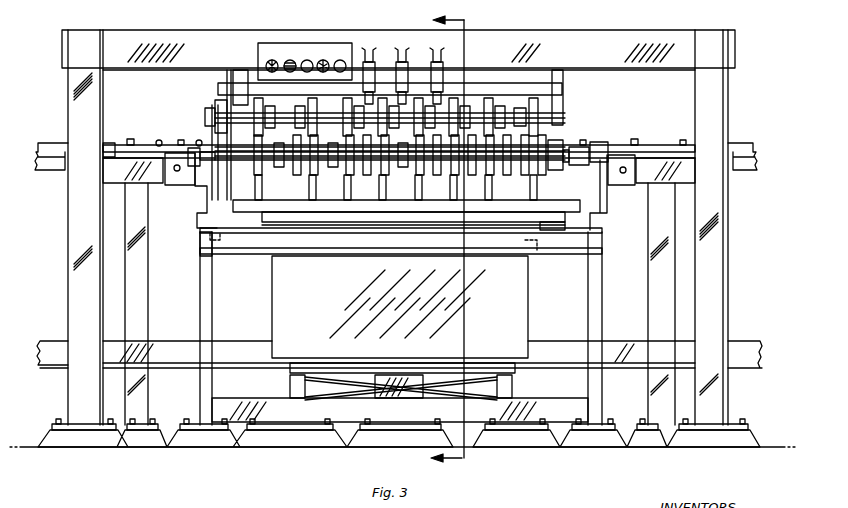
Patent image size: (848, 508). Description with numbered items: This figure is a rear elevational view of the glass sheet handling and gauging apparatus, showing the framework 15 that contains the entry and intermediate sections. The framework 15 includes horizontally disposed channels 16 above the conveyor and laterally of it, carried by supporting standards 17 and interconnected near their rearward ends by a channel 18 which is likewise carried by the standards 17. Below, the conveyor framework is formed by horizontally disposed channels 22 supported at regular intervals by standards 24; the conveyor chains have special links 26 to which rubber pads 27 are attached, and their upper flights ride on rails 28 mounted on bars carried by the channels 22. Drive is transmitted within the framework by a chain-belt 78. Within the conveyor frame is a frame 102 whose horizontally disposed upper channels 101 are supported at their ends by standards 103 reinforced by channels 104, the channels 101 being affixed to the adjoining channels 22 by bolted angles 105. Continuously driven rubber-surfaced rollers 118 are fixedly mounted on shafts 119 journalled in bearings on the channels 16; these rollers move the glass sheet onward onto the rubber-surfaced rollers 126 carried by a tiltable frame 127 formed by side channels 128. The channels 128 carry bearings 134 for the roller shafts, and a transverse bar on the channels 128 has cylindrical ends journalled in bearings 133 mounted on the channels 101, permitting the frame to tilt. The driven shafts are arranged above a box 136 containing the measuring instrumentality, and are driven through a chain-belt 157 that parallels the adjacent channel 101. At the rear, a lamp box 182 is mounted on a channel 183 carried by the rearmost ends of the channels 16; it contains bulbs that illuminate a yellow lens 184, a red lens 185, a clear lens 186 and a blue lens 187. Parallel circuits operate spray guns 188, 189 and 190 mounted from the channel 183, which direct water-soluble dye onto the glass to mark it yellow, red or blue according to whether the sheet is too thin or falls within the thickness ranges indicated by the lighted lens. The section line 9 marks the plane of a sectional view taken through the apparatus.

The section line 9- 9 is at (470, 22).
The framework 15 is at (526, 46).
The channels 16 is at (226, 89).
The supporting standards 17 is at (85, 95).
The channel 18 is at (136, 42).
The channels 22 is at (58, 172).
The standards 24 is at (135, 307).
The special links 26 is at (137, 144).
The pads 27 is at (132, 139).
The rails 28 is at (113, 144).
The chain-belt 78 is at (229, 80).
The upper channels 101 is at (207, 209).
The frame 102 is at (186, 256).
The standards 103 is at (213, 297).
The channels 104 is at (240, 236).
The bolted angles 105 is at (178, 180).
The rubber-surfaced rollers 118 is at (454, 116).
The shafts 119 is at (507, 116).
The rubber-surfaced rollers 126 is at (453, 174).
The tiltable frame 127 is at (283, 224).
The side channels 128 is at (548, 212).
The bearings 133 is at (603, 148).
The bearings 134 is at (571, 147).
The box 136 is at (494, 290).
The chain-belt 157 is at (201, 236).
The lamp box 182 is at (258, 44).
The channel 183 is at (539, 83).
The yellow lens 184 is at (272, 59).
The red lens 185 is at (290, 59).
The clear lens 186 is at (309, 59).
The blue lens 187 is at (326, 59).
The spray gun 188 is at (372, 50).
The spray gun 189 is at (405, 62).
The spray gun 190 is at (440, 62).